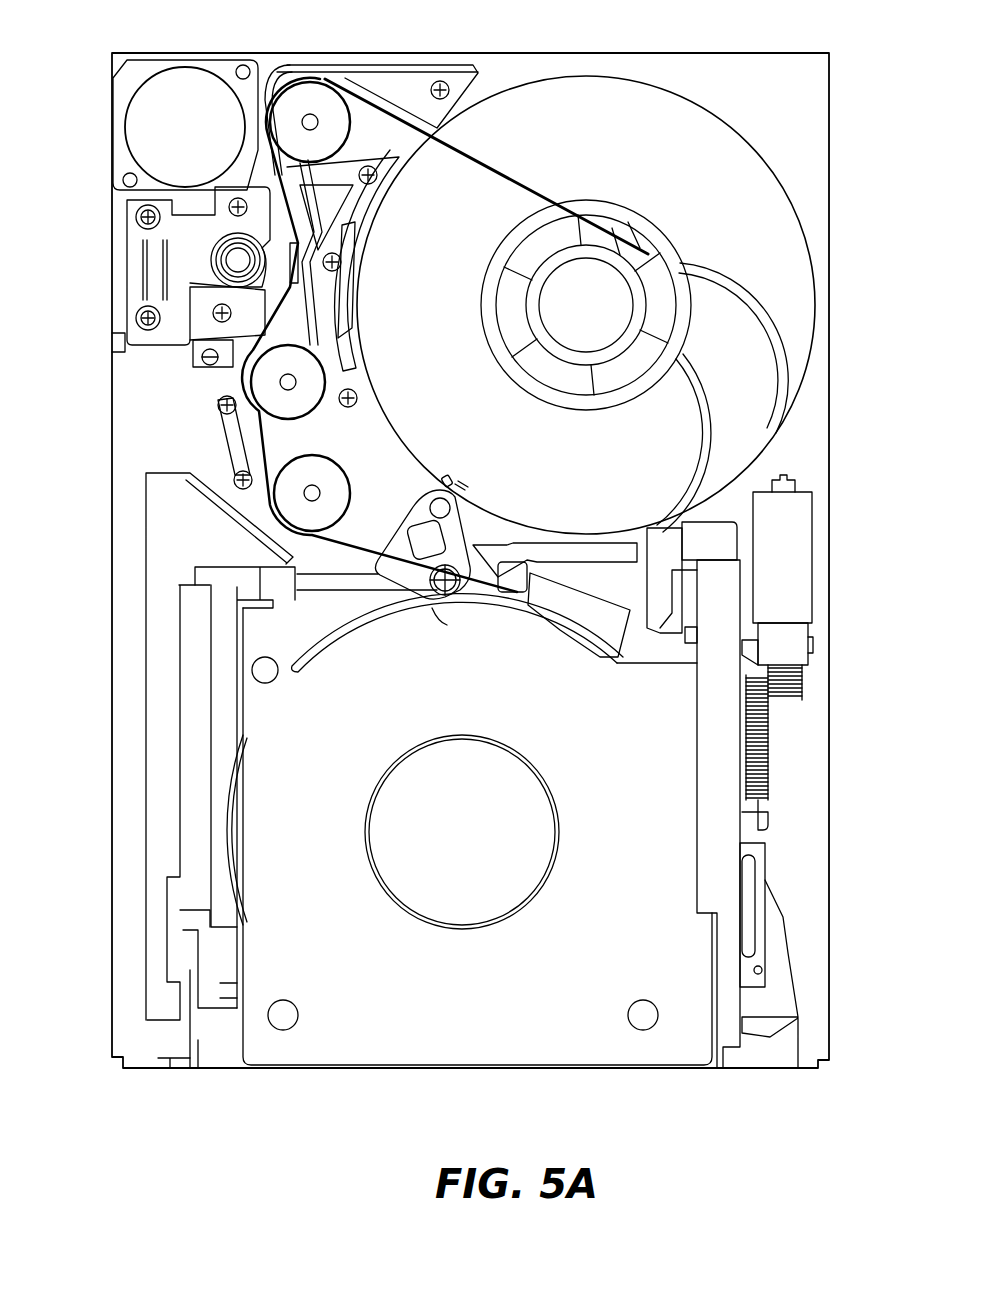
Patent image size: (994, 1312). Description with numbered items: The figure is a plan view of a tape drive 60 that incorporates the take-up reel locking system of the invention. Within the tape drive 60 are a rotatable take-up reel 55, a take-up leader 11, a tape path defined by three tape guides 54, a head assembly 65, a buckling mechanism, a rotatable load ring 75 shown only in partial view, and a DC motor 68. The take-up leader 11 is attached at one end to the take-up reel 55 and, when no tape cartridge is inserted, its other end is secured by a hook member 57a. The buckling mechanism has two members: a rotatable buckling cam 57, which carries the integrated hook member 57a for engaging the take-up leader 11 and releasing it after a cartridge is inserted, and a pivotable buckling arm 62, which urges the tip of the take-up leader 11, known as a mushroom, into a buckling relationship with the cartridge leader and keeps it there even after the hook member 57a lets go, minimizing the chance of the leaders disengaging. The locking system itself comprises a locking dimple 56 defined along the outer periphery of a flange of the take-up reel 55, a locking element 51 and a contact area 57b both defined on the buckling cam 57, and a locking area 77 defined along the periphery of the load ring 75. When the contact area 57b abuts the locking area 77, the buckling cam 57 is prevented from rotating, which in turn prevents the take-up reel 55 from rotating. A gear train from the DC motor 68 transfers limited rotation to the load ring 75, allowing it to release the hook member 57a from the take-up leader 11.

The take-up leader 11 is at (500, 160).
The locking element 51 is at (460, 487).
The tape guides 54 is at (325, 112).
The take-up reel 55 is at (716, 196).
The locking dimple 56 is at (447, 476).
The buckling cam 57 is at (422, 542).
The hook member 57a is at (463, 607).
The contact area 57b is at (437, 620).
The tape drive 60 is at (830, 228).
The buckling arm 62 is at (570, 553).
The head assembly 65 is at (197, 253).
The DC motor 68 is at (800, 508).
The load ring 75 is at (235, 828).
The locking area 77 is at (390, 600).